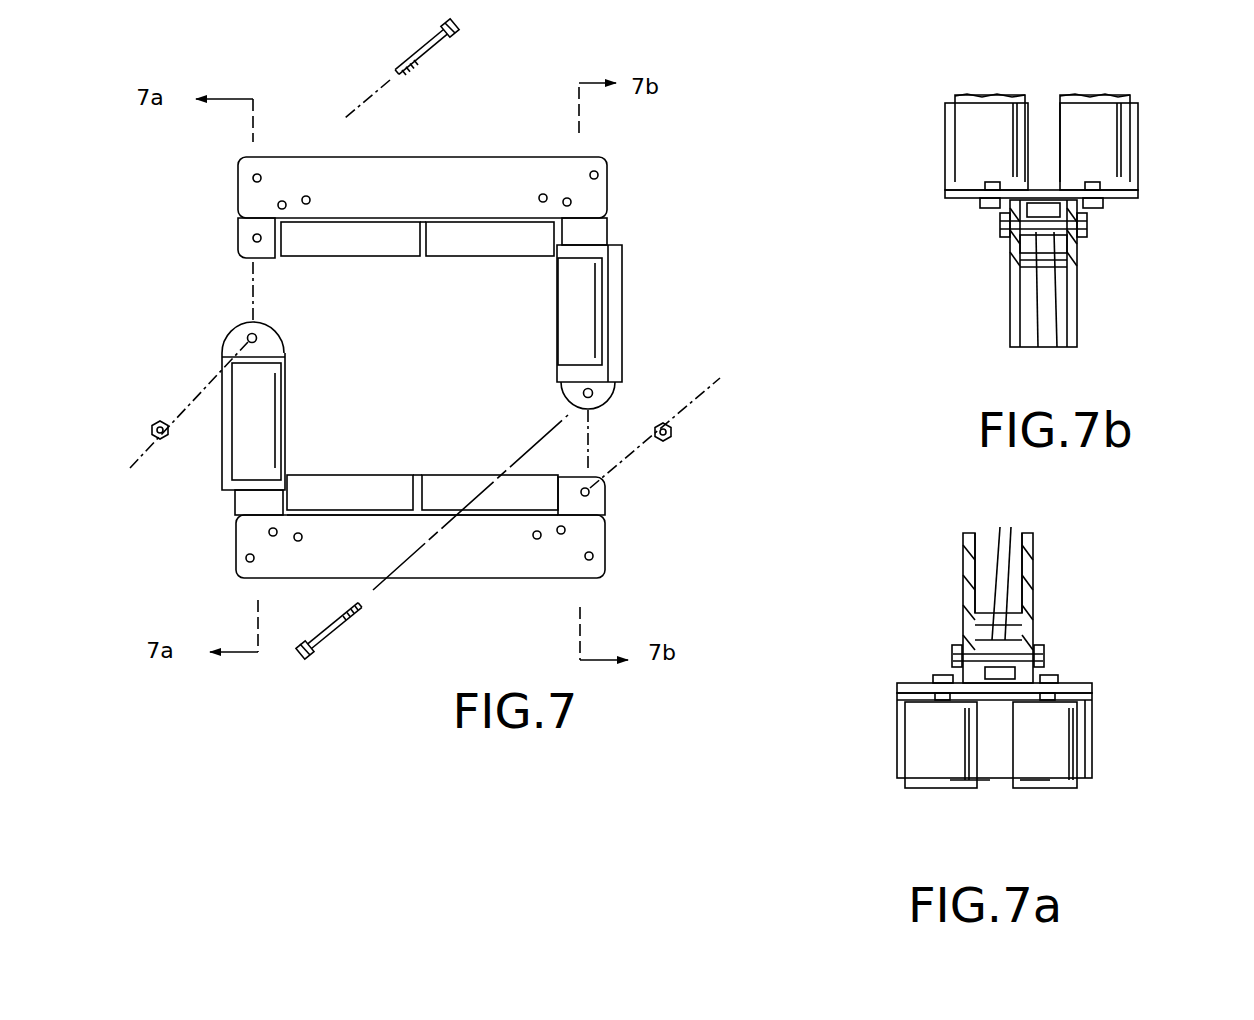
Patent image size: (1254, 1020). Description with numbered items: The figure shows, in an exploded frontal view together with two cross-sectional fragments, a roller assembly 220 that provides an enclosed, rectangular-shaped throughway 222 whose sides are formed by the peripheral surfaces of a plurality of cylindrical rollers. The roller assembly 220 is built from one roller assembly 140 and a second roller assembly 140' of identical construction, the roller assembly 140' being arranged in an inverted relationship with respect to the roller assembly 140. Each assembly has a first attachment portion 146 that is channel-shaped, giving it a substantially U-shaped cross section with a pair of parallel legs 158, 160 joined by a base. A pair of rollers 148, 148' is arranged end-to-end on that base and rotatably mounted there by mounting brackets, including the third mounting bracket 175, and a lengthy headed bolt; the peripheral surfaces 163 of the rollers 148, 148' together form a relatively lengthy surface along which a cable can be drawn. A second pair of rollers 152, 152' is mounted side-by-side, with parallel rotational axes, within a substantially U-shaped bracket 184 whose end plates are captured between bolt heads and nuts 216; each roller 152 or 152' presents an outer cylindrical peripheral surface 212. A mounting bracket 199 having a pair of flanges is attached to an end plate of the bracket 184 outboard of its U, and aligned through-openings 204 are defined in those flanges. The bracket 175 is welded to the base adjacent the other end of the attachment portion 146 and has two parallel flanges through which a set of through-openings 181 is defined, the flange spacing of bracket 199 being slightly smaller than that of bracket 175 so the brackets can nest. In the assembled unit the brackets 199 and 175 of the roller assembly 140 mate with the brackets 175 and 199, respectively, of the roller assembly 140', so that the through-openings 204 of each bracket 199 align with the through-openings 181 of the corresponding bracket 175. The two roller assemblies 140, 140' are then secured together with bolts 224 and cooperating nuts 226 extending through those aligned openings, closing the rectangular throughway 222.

In FIG. 7, the roller assembly 140 is at (285, 663).
In FIG. 7A, the roller assembly 140 is at (856, 842).
In FIG. 7B, the roller assembly 140 is at (1156, 357).
In FIG. 7, the roller assembly 140' is at (673, 139).
In FIG. 7A, the roller assembly 140' is at (844, 524).
In FIG. 7B, the roller assembly 140' is at (1158, 37).
In FIG. 7, the first attachment portion 146 is at (300, 157).
In FIG. 7A, the first attachment portion 146 is at (1033, 572).
In FIG. 7B, the first attachment portion 146 is at (1010, 328).
In FIG. 7, the roller 148 is at (419, 371).
In FIG. 7, the roller 148' is at (421, 378).
In FIG. 7, the roller 152 is at (439, 374).
In FIG. 7A, the roller 152 is at (895, 745).
In FIG. 7B, the roller 152 is at (1153, 142).
In FIG. 7A, the roller 152' is at (1101, 810).
In FIG. 7B, the roller 152' is at (947, 151).
In FIG. 7A, the leg 158 is at (963, 580).
In FIG. 7B, the leg 158 is at (1080, 307).
In FIG. 7A, the leg 160 is at (1033, 552).
In FIG. 7B, the leg 160 is at (1010, 292).
In FIG. 7, the peripheral surface 163 is at (386, 258).
In FIG. 7, the third mounting bracket 175 is at (236, 244).
In FIG. 7A, the third mounting bracket 175 is at (1033, 630).
In FIG. 7B, the third mounting bracket 175 is at (1075, 247).
In FIG. 7, the through-openings 181 is at (252, 237).
In FIG. 7A, the through-openings 181 is at (983, 680).
In FIG. 7B, the through-openings 181 is at (1007, 190).
In FIG. 7A, the U-shaped bracket 184 is at (1092, 700).
In FIG. 7B, the U-shaped bracket 184 is at (1142, 183).
In FIG. 7, the mounting bracket 199 is at (560, 383).
In FIG. 7, the through-openings 204 is at (596, 393).
In FIG. 7A, the through-openings 204 is at (1010, 569).
In FIG. 7B, the through-openings 204 is at (1048, 306).
In FIG. 7, the peripheral surface 212 is at (568, 315).
In FIG. 7A, the peripheral surface 212 is at (1042, 777).
In FIG. 7A, the nuts 216 is at (937, 676).
In FIG. 7, the roller assembly 220 is at (182, 182).
In FIG. 7, the throughway 222 is at (386, 338).
In FIG. 7, the bolts 224 is at (437, 56).
In FIG. 7A, the bolts 224 is at (1044, 657).
In FIG. 7B, the bolts 224 is at (1087, 222).
In FIG. 7, the nuts 226 is at (160, 420).
In FIG. 7A, the nuts 226 is at (956, 648).
In FIG. 7B, the nuts 226 is at (1000, 224).